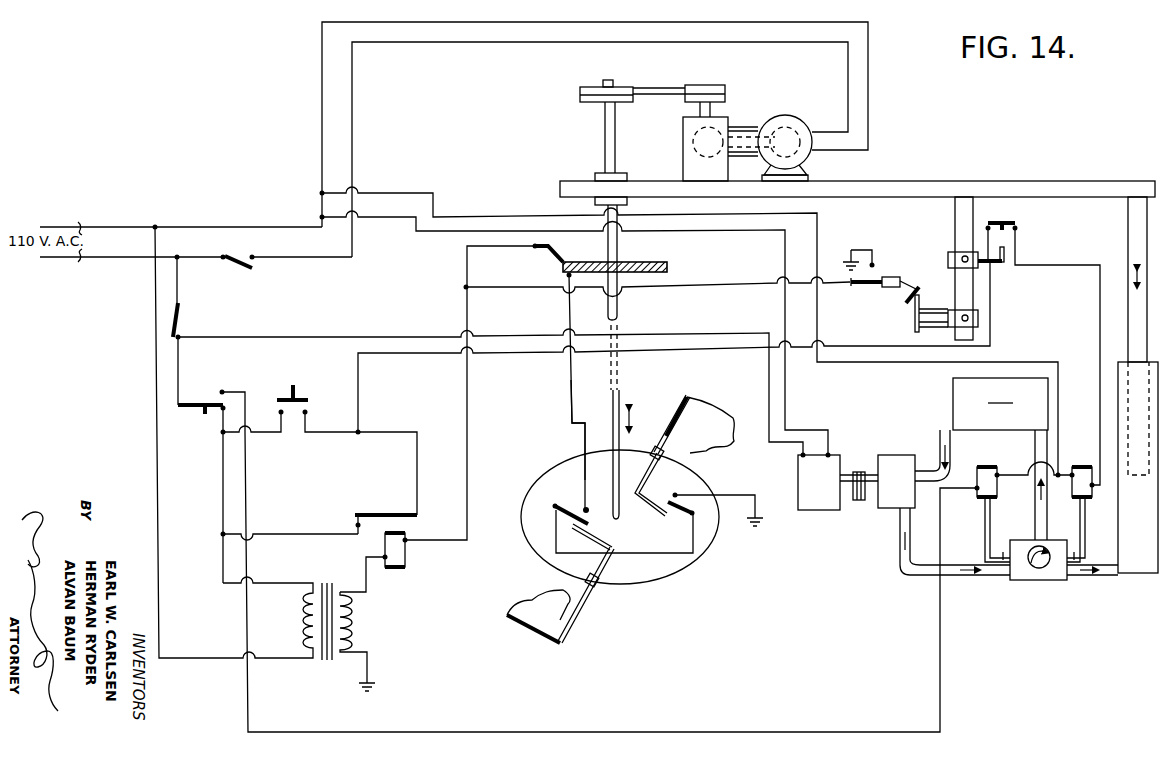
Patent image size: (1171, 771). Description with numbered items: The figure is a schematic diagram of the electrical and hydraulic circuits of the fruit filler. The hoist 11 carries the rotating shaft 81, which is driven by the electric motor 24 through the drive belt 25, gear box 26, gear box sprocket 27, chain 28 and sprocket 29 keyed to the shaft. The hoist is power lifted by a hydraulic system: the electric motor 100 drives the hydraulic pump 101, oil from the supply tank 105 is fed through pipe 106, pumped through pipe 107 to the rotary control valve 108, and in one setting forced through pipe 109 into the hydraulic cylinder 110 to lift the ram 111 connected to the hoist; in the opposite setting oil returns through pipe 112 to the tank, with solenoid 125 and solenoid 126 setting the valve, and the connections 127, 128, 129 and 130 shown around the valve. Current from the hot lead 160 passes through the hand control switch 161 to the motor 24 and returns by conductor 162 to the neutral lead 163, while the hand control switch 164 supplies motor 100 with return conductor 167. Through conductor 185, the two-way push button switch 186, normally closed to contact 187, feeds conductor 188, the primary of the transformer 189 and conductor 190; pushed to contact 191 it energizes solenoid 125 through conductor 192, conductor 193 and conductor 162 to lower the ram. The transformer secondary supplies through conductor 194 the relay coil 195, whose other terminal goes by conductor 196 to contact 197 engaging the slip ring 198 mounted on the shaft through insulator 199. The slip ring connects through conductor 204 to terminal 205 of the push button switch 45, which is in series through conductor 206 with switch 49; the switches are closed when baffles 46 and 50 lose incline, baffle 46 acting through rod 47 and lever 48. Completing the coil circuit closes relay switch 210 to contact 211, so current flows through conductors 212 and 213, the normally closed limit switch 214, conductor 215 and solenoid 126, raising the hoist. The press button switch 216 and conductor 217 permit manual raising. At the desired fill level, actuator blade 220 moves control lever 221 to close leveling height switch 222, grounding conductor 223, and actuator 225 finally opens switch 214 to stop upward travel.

The hoist 11 is at (915, 181).
The electric motor 24 is at (780, 117).
The drive belt 25 is at (742, 127).
The gear box 26 is at (683, 143).
The gear box sprocket 27 is at (700, 86).
The chain 28 is at (651, 96).
The sprocket 29 is at (583, 104).
The push button switch 45 is at (560, 498).
The baffle 46 is at (565, 632).
The rod 47 is at (592, 574).
The lever 48 is at (606, 542).
The push button switch 49 is at (668, 495).
The baffle 50 is at (715, 420).
The shaft 81 is at (618, 257).
The electric motor 100 is at (818, 510).
The hydraulic pump 101 is at (886, 455).
The supply tank 105 is at (1000, 404).
The pipe 106 is at (938, 426).
The pipe 107 is at (901, 536).
The rotary control valve 108 is at (1036, 582).
The pipe 109 is at (1093, 582).
The hydraulic cylinder 110 is at (1147, 537).
The ram 111 is at (1128, 298).
The pipe 112 is at (1035, 517).
The solenoid 125 is at (980, 498).
The solenoid 126 is at (1086, 498).
The pilot line 127 is at (985, 545).
The pilot line 128 is at (1085, 558).
The valve port 129 is at (1005, 552).
The valve port 130 is at (1069, 552).
The hot lead 160 is at (102, 257).
The hand control switch 161 is at (238, 266).
The return conductor 162 is at (634, 14).
The neutral lead 163 is at (98, 226).
The hand control switch 164 is at (177, 325).
The return conductor 167 is at (778, 264).
The conductor 185 is at (179, 370).
The push button switch 186 is at (200, 393).
The contact 187 is at (219, 424).
The conductor 188 is at (222, 506).
The transformer 189 is at (322, 660).
The conductor 190 is at (157, 529).
The contact 191 is at (219, 388).
The conductor 192 is at (470, 724).
The conductor 193 is at (1056, 363).
The conductor 194 is at (375, 576).
The coil 195 is at (405, 554).
The conductor 196 is at (467, 432).
The contact 197 is at (567, 252).
The slip ring 198 is at (563, 269).
The insulator 199 is at (580, 287).
The conductor 204 is at (569, 400).
The terminal 205 is at (587, 505).
The conductor 206 is at (663, 548).
The relay switch 210 is at (380, 514).
The contact 211 is at (353, 527).
The conductor 212 is at (298, 536).
The conductor 213 is at (412, 354).
The limit switch 214 is at (1004, 220).
The conductor 215 is at (1098, 327).
The press button switch 216 is at (280, 399).
The conductor 217 is at (315, 432).
The switch actuator blade 220 is at (921, 301).
The control lever 221 is at (910, 284).
The leveling height switch 222 is at (878, 275).
The conductor 223 is at (693, 287).
The switch actuator 225 is at (1014, 250).